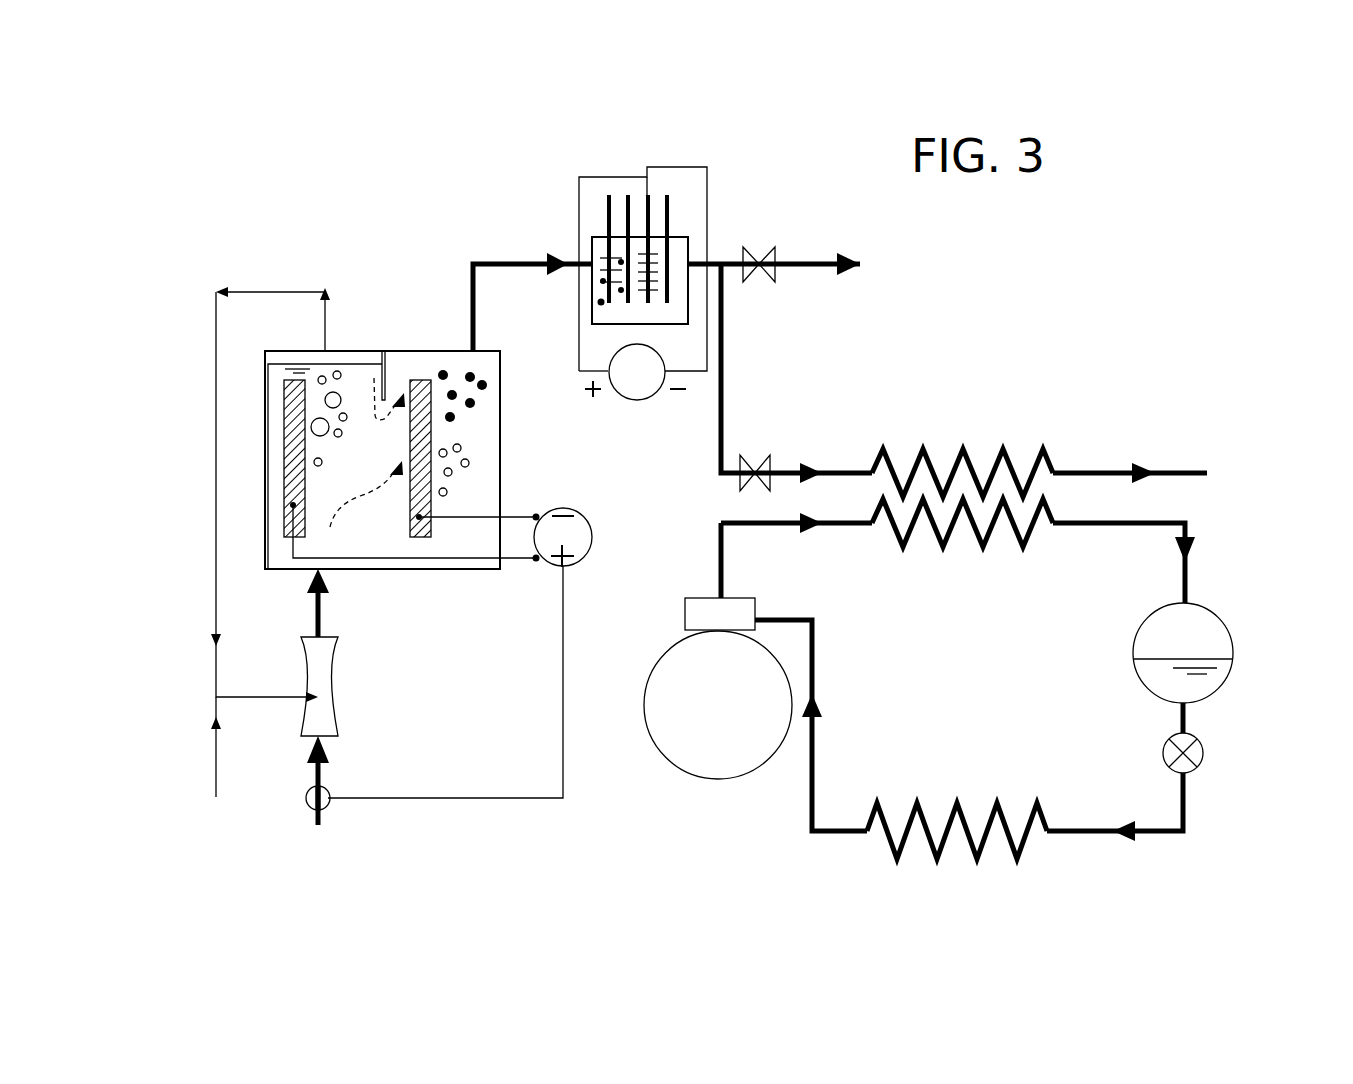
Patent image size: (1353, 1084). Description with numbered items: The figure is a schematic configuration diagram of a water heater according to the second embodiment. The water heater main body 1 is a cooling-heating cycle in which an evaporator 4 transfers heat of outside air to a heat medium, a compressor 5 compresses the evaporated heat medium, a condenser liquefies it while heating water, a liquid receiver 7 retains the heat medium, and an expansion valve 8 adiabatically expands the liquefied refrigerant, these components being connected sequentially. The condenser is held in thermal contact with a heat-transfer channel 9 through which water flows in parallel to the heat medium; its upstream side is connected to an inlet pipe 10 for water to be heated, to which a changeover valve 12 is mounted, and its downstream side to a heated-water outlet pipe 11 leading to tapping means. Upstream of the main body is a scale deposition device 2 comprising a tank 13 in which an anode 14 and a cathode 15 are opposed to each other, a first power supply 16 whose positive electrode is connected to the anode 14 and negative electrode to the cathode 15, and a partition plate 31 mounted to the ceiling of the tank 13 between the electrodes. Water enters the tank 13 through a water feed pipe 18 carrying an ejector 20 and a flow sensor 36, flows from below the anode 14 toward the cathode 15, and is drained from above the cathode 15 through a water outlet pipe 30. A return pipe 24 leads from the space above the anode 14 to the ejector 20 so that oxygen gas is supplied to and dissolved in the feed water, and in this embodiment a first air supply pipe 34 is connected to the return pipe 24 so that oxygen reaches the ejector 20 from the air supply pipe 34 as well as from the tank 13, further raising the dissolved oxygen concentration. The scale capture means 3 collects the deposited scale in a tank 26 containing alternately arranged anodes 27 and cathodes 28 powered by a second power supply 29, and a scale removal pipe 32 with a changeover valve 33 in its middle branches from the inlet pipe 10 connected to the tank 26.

The water heater main body 1 is at (1213, 547).
The scale deposition device 2 is at (362, 350).
The scale capture means 3 is at (600, 228).
The evaporator 4 is at (965, 858).
The compressor 5 is at (718, 779).
The liquid receiver 7 is at (1227, 627).
The expansion valve 8 is at (1200, 750).
The heat-transfer channel 9 is at (1013, 460).
The inlet pipe for water to be heated 10 is at (840, 468).
The heated-water outlet pipe 11 is at (1128, 470).
The changeover valve 12 is at (770, 455).
The tank 13 is at (437, 571).
The anode 14 is at (284, 415).
The cathode 15 is at (432, 430).
The first power supply 16 is at (588, 532).
The water feed pipe 18 is at (322, 768).
The ejector 20 is at (328, 668).
The return pipe 24 is at (215, 545).
The tank 26 is at (594, 318).
The anodes 27 is at (608, 198).
The cathodes 28 is at (633, 210).
The second power supply 29 is at (637, 400).
The water outlet pipe 30 is at (470, 270).
The partition plate 31 is at (401, 357).
The scale removal pipe 32 is at (814, 268).
The changeover valve 33 is at (773, 260).
The first air supply pipe 34 is at (217, 765).
The flow sensor 36 is at (325, 808).